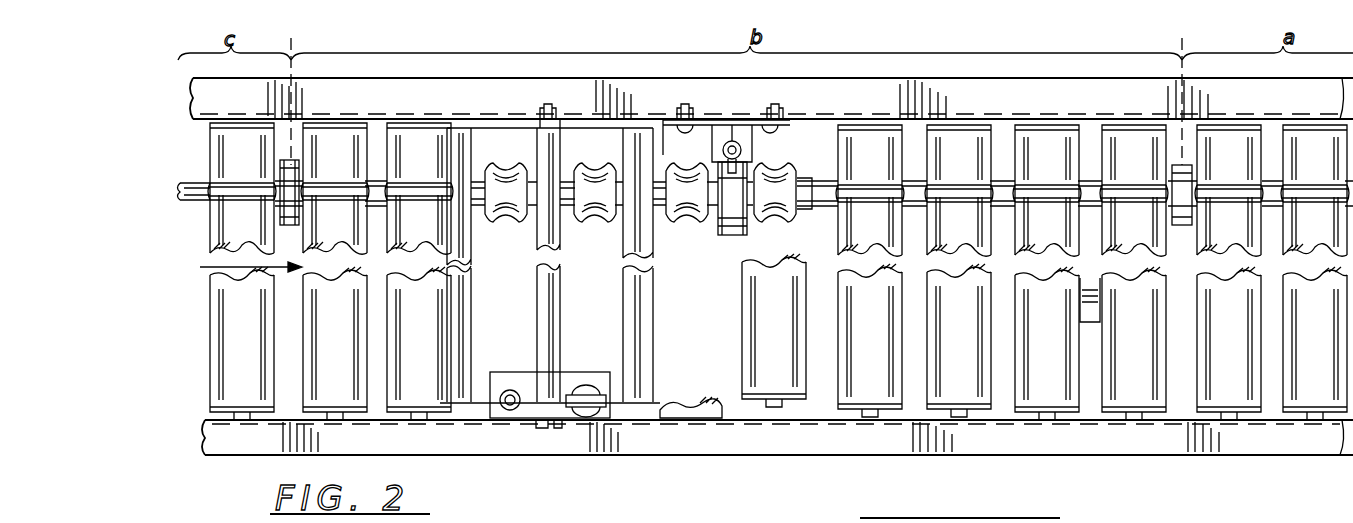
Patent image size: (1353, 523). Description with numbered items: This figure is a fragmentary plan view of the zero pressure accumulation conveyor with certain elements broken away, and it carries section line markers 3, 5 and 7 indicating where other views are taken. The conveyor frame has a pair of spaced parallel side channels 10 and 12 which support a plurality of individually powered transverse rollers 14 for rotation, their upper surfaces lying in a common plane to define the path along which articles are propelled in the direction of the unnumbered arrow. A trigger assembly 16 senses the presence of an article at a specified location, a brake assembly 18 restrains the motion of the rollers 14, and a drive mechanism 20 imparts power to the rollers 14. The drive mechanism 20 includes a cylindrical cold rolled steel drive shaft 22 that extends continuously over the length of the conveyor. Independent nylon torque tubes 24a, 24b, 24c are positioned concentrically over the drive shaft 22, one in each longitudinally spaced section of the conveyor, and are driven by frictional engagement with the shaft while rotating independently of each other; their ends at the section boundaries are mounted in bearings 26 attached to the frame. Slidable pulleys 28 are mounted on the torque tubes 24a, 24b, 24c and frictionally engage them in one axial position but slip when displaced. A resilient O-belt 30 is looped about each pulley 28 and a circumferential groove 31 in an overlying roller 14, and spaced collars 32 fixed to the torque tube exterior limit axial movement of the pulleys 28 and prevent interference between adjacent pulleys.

The side channel 10 is at (880, 135).
The side channel 12 is at (738, 457).
The transverse roller 14 is at (940, 145).
The trigger assembly 16 is at (528, 422).
The brake assembly 18 is at (738, 112).
The drive mechanism 20 is at (510, 162).
The drive shaft 22 is at (183, 181).
The torque tube 24a is at (1270, 212).
The torque tube 24b is at (568, 222).
The torque tube 24c is at (206, 208).
The bearing 26 is at (295, 225).
The slidable pulley 28 is at (506, 222).
The resilient belt 30 is at (408, 186).
The circumferential groove 31 is at (426, 200).
The collar 32 is at (533, 172).
The section line 3- 3 is at (173, 446).
The section line 5- 5 is at (660, 66).
The section line 7- 7 is at (650, 60).